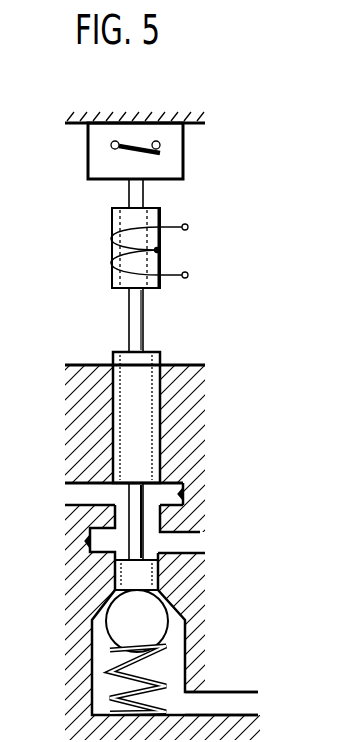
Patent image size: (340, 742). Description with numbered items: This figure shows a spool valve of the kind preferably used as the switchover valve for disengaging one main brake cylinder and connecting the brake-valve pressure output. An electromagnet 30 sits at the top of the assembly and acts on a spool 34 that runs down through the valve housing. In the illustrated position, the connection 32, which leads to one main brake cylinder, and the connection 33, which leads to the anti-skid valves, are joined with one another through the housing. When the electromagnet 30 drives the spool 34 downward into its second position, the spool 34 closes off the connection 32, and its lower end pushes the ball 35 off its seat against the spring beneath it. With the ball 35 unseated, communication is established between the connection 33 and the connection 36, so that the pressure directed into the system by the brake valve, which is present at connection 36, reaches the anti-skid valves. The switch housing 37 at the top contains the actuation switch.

The electromagnet 30 is at (183, 253).
The connection 32 is at (81, 496).
The connection 33 is at (192, 543).
The spool 34 is at (137, 416).
The ball 35 is at (150, 626).
The connection 36 is at (226, 705).
The switch housing 37 is at (162, 165).